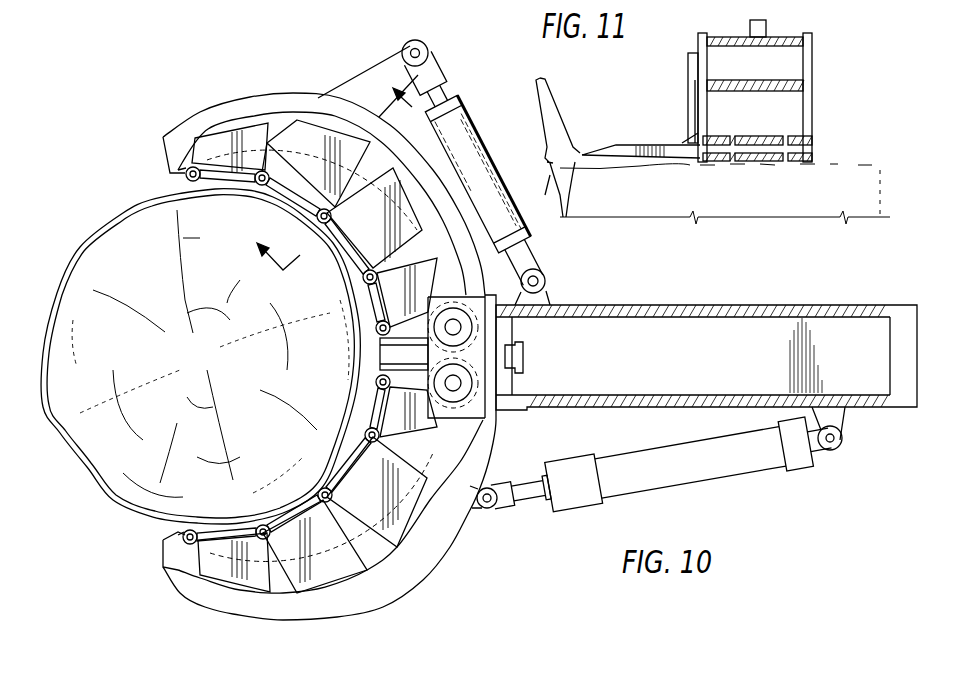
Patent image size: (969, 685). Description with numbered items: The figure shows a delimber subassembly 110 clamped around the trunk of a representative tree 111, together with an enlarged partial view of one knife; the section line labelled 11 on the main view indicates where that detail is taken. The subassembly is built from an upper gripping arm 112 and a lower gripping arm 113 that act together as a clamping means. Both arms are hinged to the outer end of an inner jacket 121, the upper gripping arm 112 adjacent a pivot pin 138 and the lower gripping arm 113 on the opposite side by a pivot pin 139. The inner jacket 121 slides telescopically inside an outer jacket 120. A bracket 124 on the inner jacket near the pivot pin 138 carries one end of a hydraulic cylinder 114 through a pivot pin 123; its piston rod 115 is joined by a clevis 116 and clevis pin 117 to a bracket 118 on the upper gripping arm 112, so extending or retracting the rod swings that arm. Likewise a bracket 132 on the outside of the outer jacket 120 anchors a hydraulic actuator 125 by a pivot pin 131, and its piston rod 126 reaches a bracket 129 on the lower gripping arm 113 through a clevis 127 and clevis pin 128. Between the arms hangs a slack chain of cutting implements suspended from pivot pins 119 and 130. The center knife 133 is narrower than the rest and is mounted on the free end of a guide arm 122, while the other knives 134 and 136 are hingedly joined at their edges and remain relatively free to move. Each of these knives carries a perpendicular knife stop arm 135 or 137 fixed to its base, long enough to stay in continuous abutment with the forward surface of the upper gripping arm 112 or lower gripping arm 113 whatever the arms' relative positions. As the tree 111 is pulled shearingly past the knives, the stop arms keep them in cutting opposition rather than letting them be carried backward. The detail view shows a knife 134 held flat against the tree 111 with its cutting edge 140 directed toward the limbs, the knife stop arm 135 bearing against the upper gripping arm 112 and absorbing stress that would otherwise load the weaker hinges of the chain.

In FIG. 10, the delimber subassembly 110 is at (226, 82).
In FIG. 10, the tree 111 is at (100, 220).
In FIG. 11, the tree 111 is at (858, 163).
In FIG. 10, the upper gripping arm 112 is at (264, 92).
In FIG. 11, the upper gripping arm 112 is at (815, 60).
In FIG. 10, the lower gripping arm 113 is at (415, 572).
In FIG. 10, the hydraulic cylinder 114 is at (480, 148).
In FIG. 10, the piston rod 115 is at (441, 91).
In FIG. 10, the clevis 116 is at (436, 67).
In FIG. 10, the clevis pin 117 is at (409, 47).
In FIG. 10, the bracket 118 is at (356, 75).
In FIG. 11, the bracket 118 is at (767, 30).
In FIG. 10, the pivot pin 119 is at (170, 140).
In FIG. 10, the outer jacket 120 is at (753, 305).
In FIG. 10, the inner jacket 121 is at (665, 318).
In FIG. 10, the guide arm 122 is at (516, 340).
In FIG. 10, the pivot pin 123 is at (546, 277).
In FIG. 10, the bracket 124 is at (550, 298).
In FIG. 10, the hydraulic actuator 125 is at (714, 470).
In FIG. 10, the piston rod 126 is at (528, 480).
In FIG. 10, the clevis 127 is at (499, 483).
In FIG. 10, the clevis pin 128 is at (489, 508).
In FIG. 10, the bracket 129 is at (475, 508).
In FIG. 10, the pivot pin 130 is at (180, 540).
In FIG. 10, the pivot pin 131 is at (838, 448).
In FIG. 10, the bracket 132 is at (846, 412).
In FIG. 10, the center knife 133 is at (370, 355).
In FIG. 10, the knife 134 is at (358, 298).
In FIG. 11, the knife 134 is at (655, 142).
In FIG. 10, the knife stop arm 135 is at (430, 265).
In FIG. 11, the knife stop arm 135 is at (688, 66).
In FIG. 10, the knife 136 is at (297, 490).
In FIG. 10, the knife stop arm 137 is at (345, 568).
In FIG. 10, the pivot pin 138 is at (455, 318).
In FIG. 10, the pivot pin 139 is at (472, 386).
In FIG. 11, the cutting edge 140 is at (588, 150).
In FIG. 10, the section line 11 is at (324, 166).